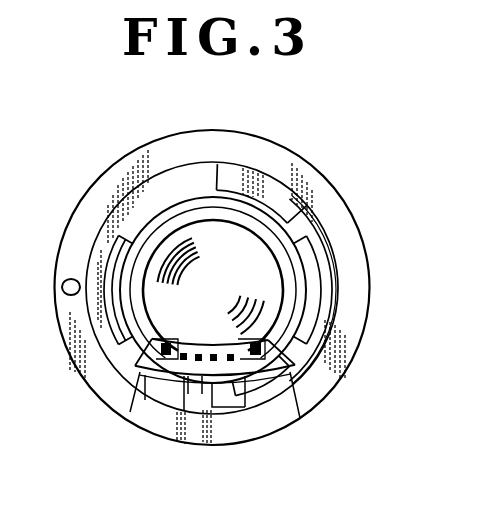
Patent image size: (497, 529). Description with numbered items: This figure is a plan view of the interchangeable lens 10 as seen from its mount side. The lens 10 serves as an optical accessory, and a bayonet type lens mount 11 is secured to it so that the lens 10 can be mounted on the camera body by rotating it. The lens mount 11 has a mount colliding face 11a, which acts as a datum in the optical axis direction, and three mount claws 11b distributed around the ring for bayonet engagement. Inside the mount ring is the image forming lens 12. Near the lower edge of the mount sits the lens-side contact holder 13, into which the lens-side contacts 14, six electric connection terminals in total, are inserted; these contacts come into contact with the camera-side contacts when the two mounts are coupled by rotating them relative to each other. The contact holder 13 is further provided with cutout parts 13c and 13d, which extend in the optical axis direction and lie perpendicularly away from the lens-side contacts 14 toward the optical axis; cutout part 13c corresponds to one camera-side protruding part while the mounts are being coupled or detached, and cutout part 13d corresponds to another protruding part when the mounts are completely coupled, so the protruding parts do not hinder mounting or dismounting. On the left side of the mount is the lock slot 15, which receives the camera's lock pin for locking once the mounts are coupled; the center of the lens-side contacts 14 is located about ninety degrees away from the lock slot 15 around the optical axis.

The interchangeable lens 10 is at (101, 172).
The lens mount 11 is at (338, 223).
The mount colliding face 11a is at (358, 307).
The mount claws 11b is at (225, 177).
The image forming lens 12 is at (206, 237).
The lens-side contact holder 13 is at (150, 368).
The cutout part 13c is at (238, 384).
The cutout part 13d is at (294, 366).
The lens-side contacts 14 is at (207, 444).
The lock slot 15 is at (63, 297).